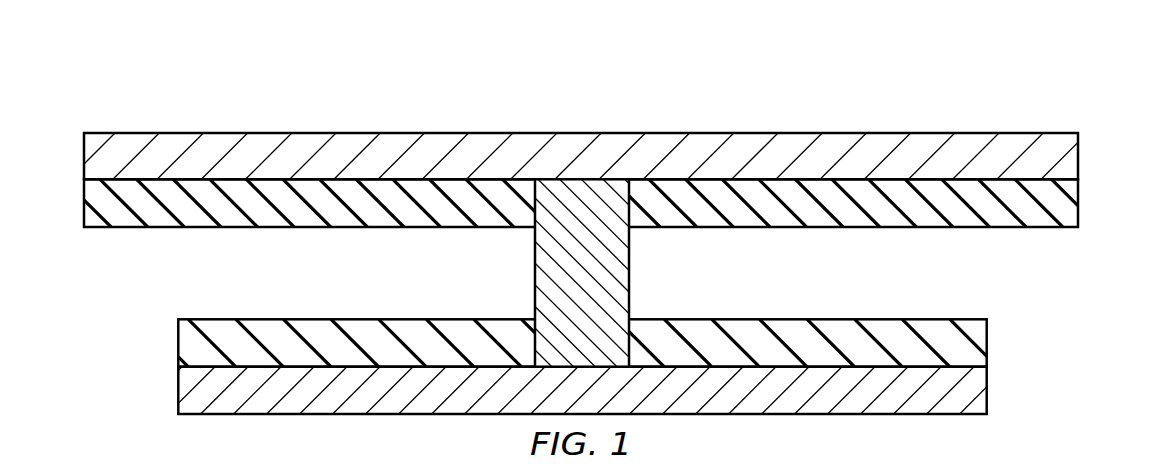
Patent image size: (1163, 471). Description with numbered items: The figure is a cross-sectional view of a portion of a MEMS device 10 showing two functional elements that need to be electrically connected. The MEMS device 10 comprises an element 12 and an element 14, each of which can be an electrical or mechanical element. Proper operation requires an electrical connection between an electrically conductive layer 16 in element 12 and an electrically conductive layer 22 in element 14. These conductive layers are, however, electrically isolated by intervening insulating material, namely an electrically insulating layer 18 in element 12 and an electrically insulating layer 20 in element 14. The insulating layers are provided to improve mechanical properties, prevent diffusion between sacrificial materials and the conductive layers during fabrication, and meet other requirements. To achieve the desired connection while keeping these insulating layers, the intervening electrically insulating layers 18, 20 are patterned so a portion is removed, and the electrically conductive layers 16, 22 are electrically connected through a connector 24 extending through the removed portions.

The MEMS device 10 is at (601, 259).
The element 12 is at (601, 180).
The element 14 is at (590, 367).
The electrically conductive layer 16 is at (748, 143).
The electrically insulating layer 18 is at (195, 218).
The electrically insulating layer 20 is at (319, 328).
The electrically conductive layer 22 is at (358, 403).
The connector 24 is at (545, 255).